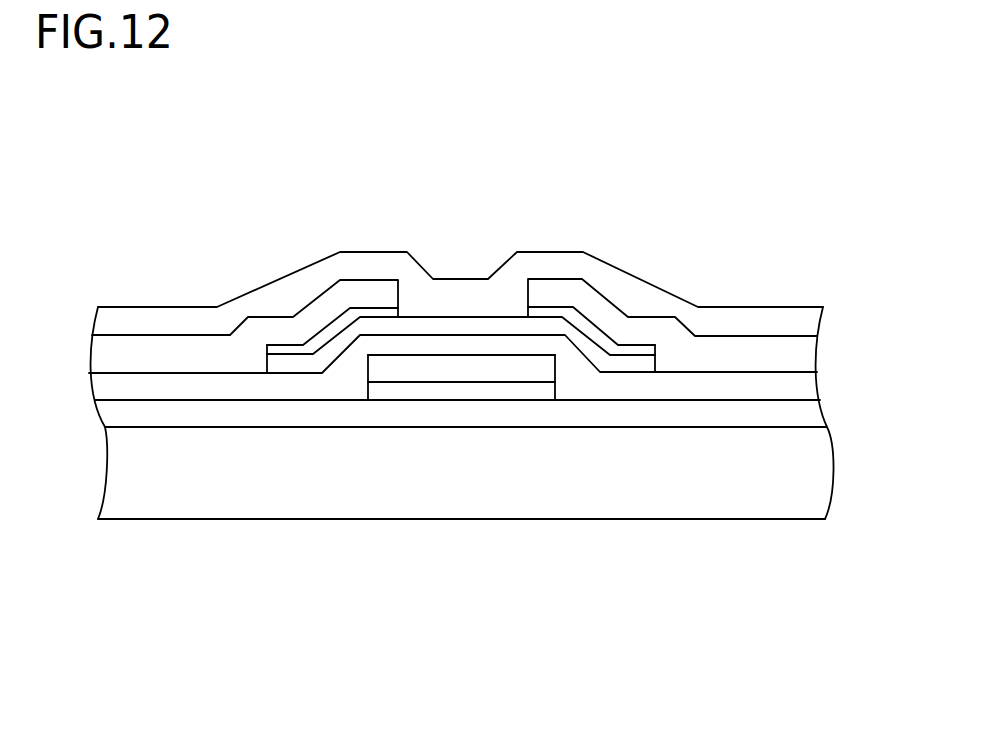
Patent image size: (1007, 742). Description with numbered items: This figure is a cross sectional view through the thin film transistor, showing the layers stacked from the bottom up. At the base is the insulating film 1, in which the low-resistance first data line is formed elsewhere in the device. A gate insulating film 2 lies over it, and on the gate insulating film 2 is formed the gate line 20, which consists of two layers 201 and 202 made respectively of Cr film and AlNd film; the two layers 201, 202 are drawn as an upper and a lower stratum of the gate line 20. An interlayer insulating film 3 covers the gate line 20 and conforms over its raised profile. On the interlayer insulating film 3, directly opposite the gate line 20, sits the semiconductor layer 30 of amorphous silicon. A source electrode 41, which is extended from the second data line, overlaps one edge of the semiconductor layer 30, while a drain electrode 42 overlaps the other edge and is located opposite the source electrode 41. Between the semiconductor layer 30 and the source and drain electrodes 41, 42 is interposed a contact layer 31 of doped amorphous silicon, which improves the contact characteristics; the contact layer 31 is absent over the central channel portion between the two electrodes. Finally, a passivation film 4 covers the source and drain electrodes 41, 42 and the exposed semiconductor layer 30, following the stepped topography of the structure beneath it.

The insulating film 1 is at (815, 473).
The gate insulating film 2 is at (815, 410).
The interlayer insulating film 3 is at (815, 383).
The passivation film 4 is at (815, 328).
The gate line 20 is at (527, 573).
The layer of gate line 201 is at (407, 392).
The layer of gate line 202 is at (505, 387).
The semiconductor layer 30 is at (657, 352).
The contact layer 31 is at (580, 313).
The source electrode 41 is at (348, 292).
The drain electrode 42 is at (548, 292).